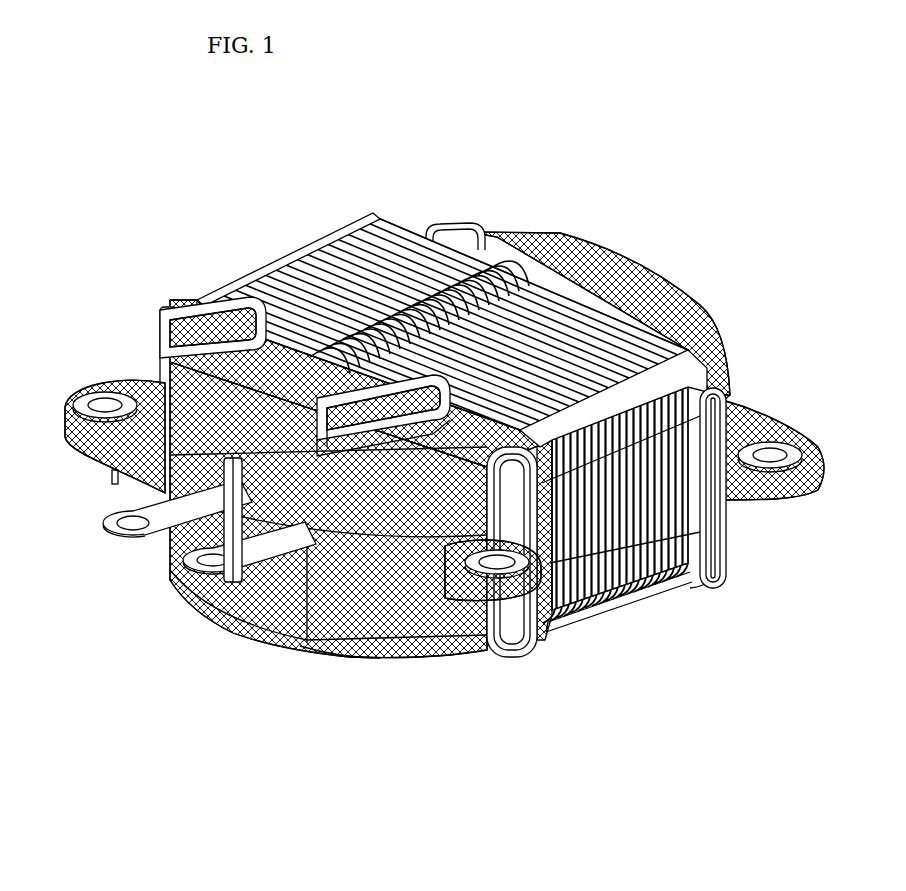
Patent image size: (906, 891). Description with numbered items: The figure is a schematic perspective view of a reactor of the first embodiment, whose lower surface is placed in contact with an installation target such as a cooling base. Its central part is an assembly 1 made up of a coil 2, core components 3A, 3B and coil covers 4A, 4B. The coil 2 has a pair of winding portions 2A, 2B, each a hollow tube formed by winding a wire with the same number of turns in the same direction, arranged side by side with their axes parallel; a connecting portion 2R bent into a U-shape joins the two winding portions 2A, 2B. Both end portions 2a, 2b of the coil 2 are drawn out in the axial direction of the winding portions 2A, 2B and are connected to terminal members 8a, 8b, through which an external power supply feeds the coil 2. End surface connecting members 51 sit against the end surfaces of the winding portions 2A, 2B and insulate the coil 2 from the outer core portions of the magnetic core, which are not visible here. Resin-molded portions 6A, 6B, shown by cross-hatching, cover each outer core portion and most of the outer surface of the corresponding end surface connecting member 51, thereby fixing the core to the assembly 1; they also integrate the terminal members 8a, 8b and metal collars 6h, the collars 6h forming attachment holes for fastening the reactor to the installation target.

The assembly 1 is at (423, 442).
The coil 2 is at (457, 398).
The winding portion 2A is at (391, 223).
The winding portion 2B is at (640, 580).
The connecting portion 2R is at (453, 220).
The end portion 2a is at (186, 330).
The end portion 2b is at (343, 660).
The core component 3A is at (512, 552).
The core component 3B is at (713, 488).
The coil cover 4A is at (313, 240).
The coil cover 4B is at (670, 380).
The end surface connecting member 51 is at (651, 572).
The resin-molded portion 6A is at (433, 535).
The resin-molded portion 6B is at (546, 228).
The metal collar 6h is at (100, 388).
The terminal member 8a is at (166, 313).
The terminal member 8b is at (116, 477).